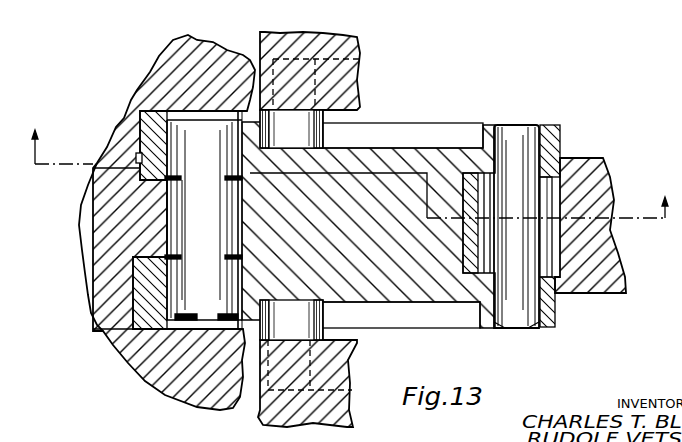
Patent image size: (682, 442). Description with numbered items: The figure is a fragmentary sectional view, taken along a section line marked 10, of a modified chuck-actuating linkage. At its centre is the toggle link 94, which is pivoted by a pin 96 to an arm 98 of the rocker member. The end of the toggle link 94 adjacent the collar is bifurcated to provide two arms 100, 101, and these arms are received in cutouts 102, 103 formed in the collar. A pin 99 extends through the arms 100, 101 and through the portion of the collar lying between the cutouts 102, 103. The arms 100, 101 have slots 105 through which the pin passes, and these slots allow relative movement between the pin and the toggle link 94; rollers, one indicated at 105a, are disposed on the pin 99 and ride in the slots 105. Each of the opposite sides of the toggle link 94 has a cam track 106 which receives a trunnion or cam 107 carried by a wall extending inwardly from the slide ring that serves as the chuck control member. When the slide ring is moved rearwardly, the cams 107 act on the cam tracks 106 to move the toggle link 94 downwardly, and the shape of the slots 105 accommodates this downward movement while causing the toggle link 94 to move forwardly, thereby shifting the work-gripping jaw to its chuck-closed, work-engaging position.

The section line 10- 10 is at (350, 162).
The toggle link 94 is at (407, 158).
The pin 96 is at (518, 140).
The arm 98 is at (605, 181).
The pin 99 is at (203, 133).
The arm 100 is at (147, 135).
The arm 101 is at (145, 307).
The cutout 102 is at (137, 157).
The cutout 103 is at (110, 330).
The slot 105 is at (158, 282).
The upper retaining ring 105a is at (167, 115).
The cam track 106 is at (468, 130).
The trunnion or cam 107 is at (328, 133).